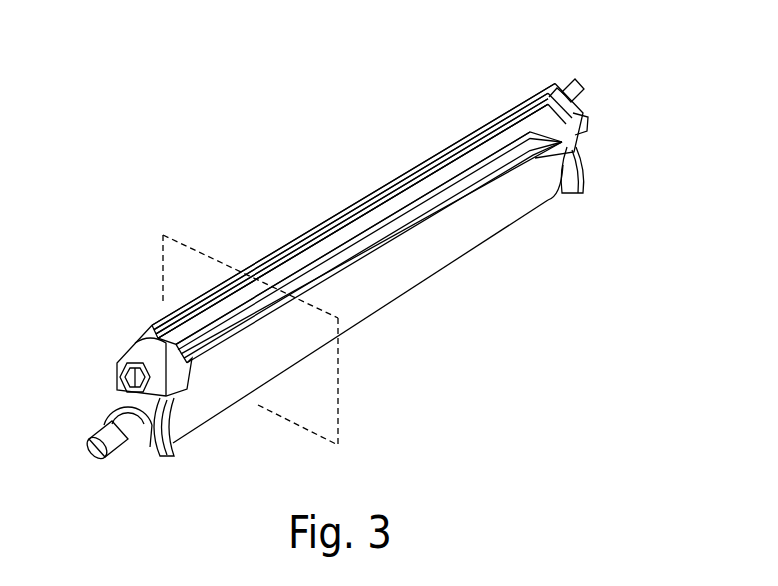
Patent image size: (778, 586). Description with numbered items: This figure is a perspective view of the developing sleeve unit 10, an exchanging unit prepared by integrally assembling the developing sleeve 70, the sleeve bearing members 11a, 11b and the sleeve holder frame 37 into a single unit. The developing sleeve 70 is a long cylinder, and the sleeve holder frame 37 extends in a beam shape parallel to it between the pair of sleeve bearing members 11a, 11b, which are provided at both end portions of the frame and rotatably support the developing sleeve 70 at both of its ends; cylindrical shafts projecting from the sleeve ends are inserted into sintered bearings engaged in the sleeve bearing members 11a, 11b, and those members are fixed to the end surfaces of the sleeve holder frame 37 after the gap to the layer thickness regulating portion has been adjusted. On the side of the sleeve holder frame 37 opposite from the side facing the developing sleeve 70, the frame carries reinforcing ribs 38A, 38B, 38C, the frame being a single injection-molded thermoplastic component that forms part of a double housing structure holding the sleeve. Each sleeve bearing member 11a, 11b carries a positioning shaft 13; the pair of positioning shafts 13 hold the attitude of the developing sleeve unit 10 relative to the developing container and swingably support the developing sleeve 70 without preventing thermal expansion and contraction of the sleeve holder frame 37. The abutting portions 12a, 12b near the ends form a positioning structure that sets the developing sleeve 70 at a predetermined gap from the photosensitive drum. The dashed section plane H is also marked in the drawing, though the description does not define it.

The developing sleeve unit 10 is at (294, 98).
The sleeve holder frame 37 is at (420, 118).
The reinforcing rib 38A is at (487, 128).
The reinforcing rib 38B is at (440, 178).
The reinforcing rib 38C is at (378, 175).
The developing sleeve 70 is at (444, 272).
The cross-section plane H is at (340, 396).
The positioning shaft 13 is at (570, 80).
The sleeve bearing member 11a is at (135, 425).
The sleeve bearing member 11b is at (586, 127).
The abutting portion 12a is at (176, 448).
The abutting portion 12b is at (574, 185).